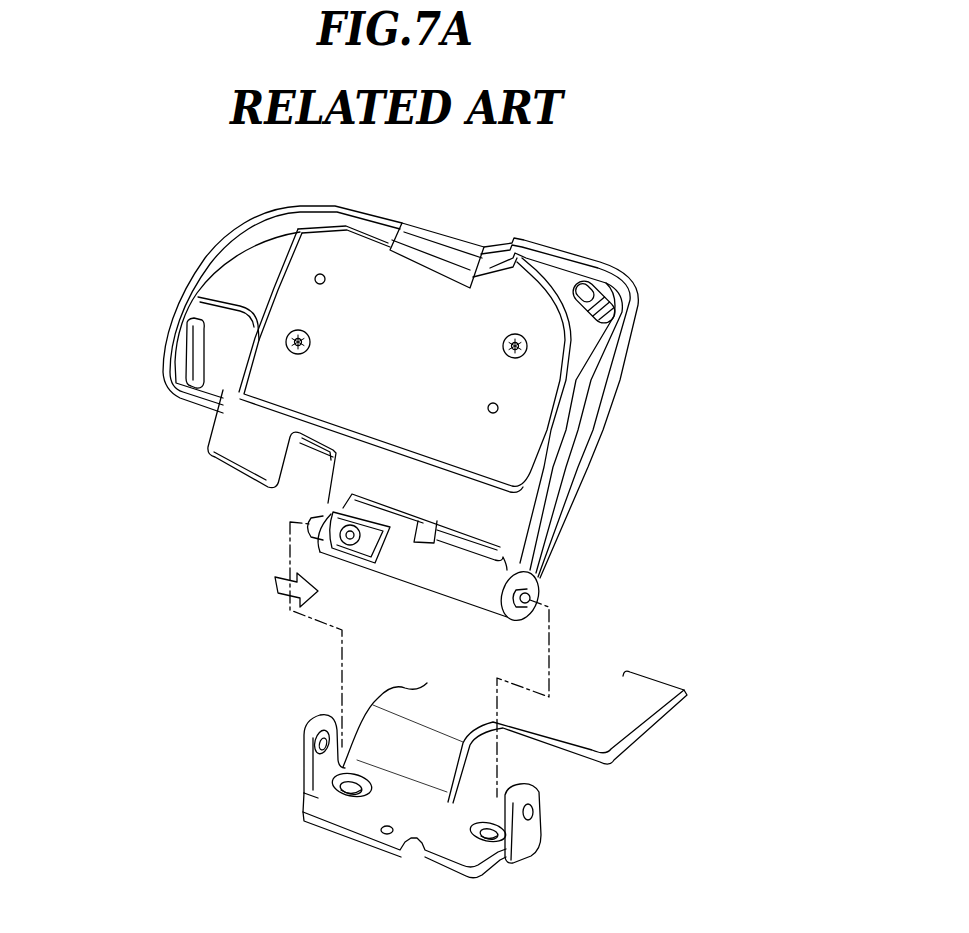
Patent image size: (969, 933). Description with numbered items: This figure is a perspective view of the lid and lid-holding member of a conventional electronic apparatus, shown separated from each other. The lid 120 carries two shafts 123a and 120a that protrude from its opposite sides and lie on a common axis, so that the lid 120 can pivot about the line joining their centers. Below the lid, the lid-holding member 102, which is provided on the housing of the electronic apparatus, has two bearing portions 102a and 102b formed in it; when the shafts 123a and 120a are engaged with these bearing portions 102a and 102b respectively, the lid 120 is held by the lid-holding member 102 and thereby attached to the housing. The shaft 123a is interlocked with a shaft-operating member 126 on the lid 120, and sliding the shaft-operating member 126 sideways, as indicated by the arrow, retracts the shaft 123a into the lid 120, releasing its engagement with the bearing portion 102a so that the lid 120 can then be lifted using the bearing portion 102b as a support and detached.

The lid 120 is at (237, 265).
The shaft 120a is at (535, 590).
The shaft 123a is at (311, 533).
The shaft-operating member 126 is at (330, 510).
The lid-holding member 102 is at (345, 815).
The bearing portion 102a is at (320, 745).
The bearing portion 102b is at (535, 812).